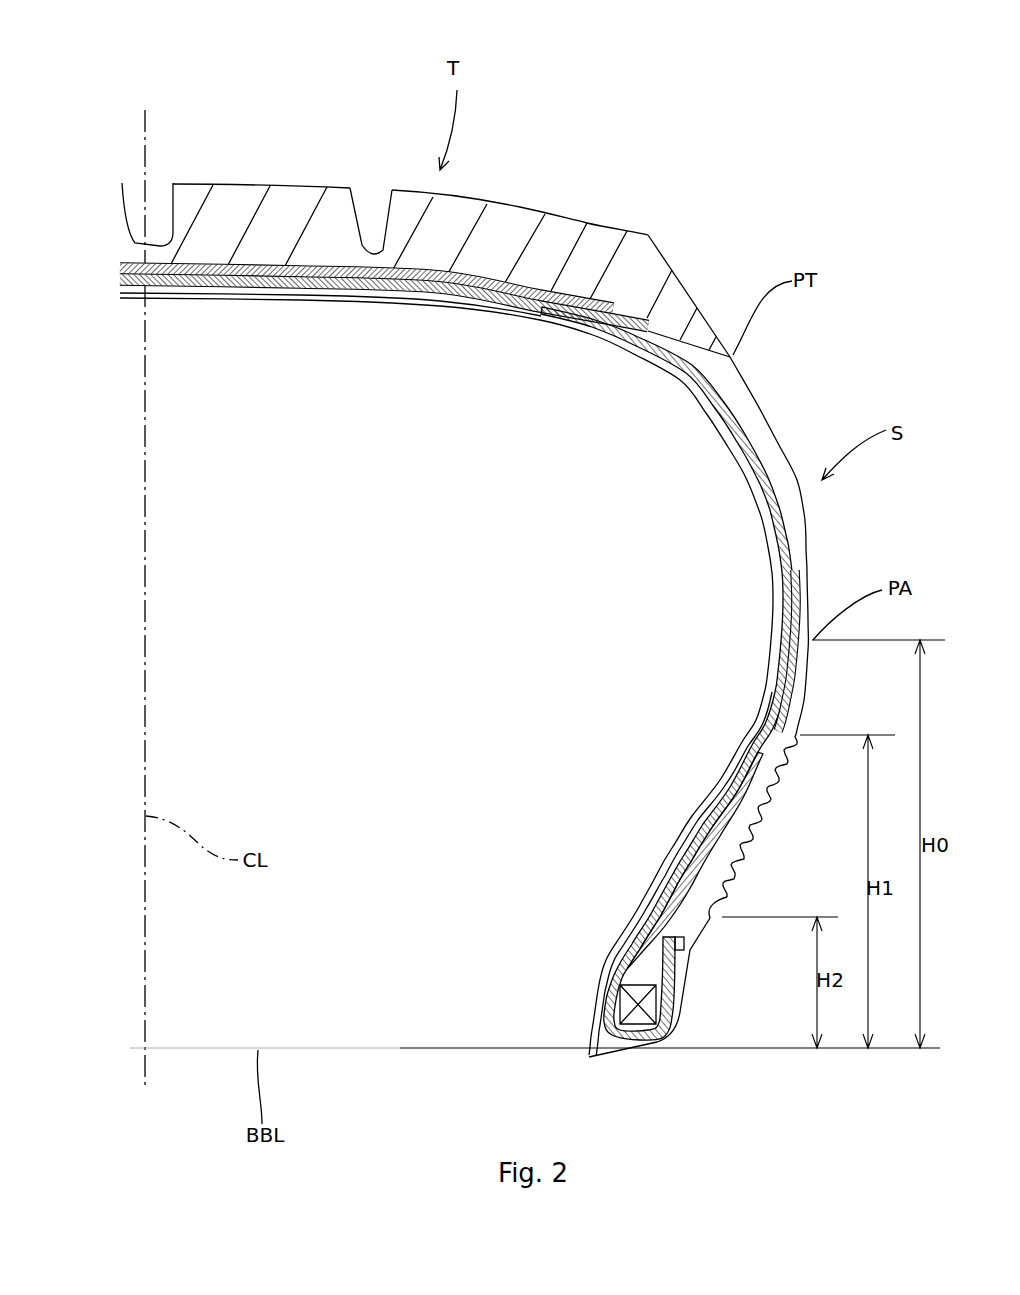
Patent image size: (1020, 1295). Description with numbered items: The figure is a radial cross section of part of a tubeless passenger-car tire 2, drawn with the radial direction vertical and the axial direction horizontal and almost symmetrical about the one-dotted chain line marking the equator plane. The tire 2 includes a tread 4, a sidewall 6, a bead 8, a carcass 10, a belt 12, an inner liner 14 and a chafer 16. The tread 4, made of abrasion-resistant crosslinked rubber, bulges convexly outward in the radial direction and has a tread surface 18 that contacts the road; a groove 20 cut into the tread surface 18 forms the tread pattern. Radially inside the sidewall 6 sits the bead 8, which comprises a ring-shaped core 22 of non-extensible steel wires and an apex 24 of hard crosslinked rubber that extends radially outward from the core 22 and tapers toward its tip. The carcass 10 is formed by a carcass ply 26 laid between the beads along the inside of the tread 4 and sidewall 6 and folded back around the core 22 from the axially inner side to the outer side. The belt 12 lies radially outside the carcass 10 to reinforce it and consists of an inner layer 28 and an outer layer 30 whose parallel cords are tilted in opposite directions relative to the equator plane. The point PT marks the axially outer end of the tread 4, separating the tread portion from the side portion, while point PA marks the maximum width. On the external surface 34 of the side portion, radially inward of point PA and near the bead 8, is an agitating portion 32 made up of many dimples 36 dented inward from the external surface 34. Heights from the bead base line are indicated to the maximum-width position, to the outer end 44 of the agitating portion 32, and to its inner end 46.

The tire 2 is at (728, 30).
The tread 4 is at (468, 194).
The sidewall 6 is at (808, 562).
The bead 8 is at (710, 952).
The carcass 10 is at (383, 314).
The belt 12 is at (384, 191).
The inner liner 14 is at (603, 333).
The chafer 16 is at (645, 1046).
The tread surface 18 is at (297, 183).
The groove 20 is at (167, 183).
The core 22 is at (647, 1003).
The apex 24 is at (668, 890).
The carcass ply 26 is at (288, 295).
The inner layer 28 is at (632, 318).
The outer layer 30 is at (532, 284).
The agitating portion 32 is at (833, 740).
The external surface 34 is at (802, 727).
The dimple 36 is at (803, 732).
The outer end 44 is at (810, 723).
The inner end 46 is at (712, 920).